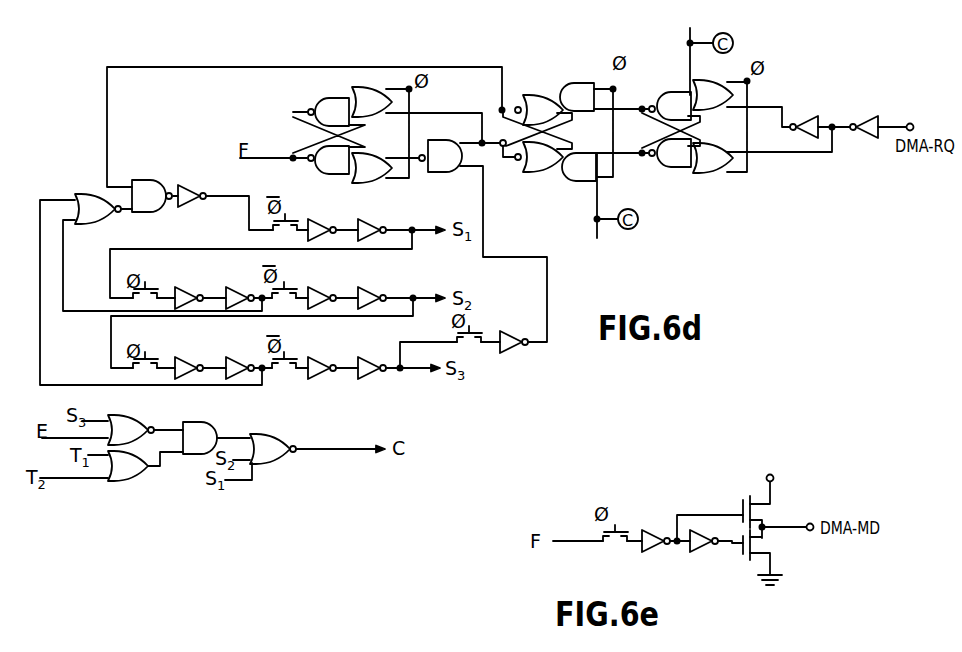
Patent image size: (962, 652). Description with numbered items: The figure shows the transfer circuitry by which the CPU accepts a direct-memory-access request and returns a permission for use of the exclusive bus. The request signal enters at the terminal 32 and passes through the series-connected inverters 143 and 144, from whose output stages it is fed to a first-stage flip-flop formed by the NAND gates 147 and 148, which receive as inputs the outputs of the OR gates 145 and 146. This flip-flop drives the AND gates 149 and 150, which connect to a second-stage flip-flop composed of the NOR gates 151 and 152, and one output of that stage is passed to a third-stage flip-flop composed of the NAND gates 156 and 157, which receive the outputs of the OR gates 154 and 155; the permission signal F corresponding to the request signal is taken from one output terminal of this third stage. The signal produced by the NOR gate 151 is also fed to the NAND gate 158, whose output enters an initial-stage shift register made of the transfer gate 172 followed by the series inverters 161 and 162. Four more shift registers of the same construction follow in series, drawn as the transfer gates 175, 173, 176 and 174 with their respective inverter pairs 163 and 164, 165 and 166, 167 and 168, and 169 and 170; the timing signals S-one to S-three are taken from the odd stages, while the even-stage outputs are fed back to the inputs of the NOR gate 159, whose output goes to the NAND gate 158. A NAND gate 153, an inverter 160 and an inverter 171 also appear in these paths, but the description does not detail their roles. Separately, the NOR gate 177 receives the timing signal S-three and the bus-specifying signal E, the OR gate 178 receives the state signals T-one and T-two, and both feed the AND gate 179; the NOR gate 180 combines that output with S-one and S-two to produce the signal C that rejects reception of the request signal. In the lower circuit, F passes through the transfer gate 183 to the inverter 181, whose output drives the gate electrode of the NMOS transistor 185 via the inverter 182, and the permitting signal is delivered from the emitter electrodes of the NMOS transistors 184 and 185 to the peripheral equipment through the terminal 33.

In FIG. 6d, the terminal 32 is at (908, 124).
In FIG. 6e, the terminal 33 is at (808, 523).
In FIG. 6d, the inverter 143 is at (856, 116).
In FIG. 6d, the inverter 144 is at (800, 114).
In FIG. 6d, the OR gate 145 is at (700, 82).
In FIG. 6d, the OR gate 146 is at (713, 146).
In FIG. 6d, the NAND gate 147 is at (678, 92).
In FIG. 6d, the NAND gate 148 is at (658, 167).
In FIG. 6d, the AND gate 149 is at (590, 83).
In FIG. 6d, the AND gate 150 is at (572, 136).
In FIG. 6d, the NOR gate 151 is at (545, 97).
In FIG. 6d, the NOR gate 152 is at (535, 170).
In FIG. 6d, the NAND gate 153 is at (472, 130).
In FIG. 6d, the OR gate 154 is at (377, 88).
In FIG. 6d, the OR gate 155 is at (376, 153).
In FIG. 6d, the NAND gate 156 is at (338, 100).
In FIG. 6d, the NAND gate 157 is at (350, 166).
In FIG. 6d, the NAND gate 158 is at (166, 176).
In FIG. 6d, the NOR gate 159 is at (92, 196).
In FIG. 6d, the inverter 160 is at (193, 183).
In FIG. 6d, the inverter 161 is at (326, 218).
In FIG. 6d, the inverter 162 is at (373, 224).
In FIG. 6d, the inverter 163 is at (193, 292).
In FIG. 6d, the inverter 164 is at (240, 292).
In FIG. 6d, the inverter 165 is at (314, 296).
In FIG. 6d, the inverter 166 is at (360, 293).
In FIG. 6d, the inverter 167 is at (200, 358).
In FIG. 6d, the inverter 168 is at (241, 364).
In FIG. 6d, the inverter 169 is at (315, 362).
In FIG. 6d, the inverter 170 is at (358, 363).
In FIG. 6d, the inverter with clocked switch 171 is at (526, 324).
In FIG. 6d, the transfer gate 172 is at (298, 226).
In FIG. 6d, the clocked switch 173 is at (296, 290).
In FIG. 6d, the clocked switch 174 is at (302, 352).
In FIG. 6d, the clocked switch 175 is at (152, 290).
In FIG. 6d, the clocked switch 176 is at (162, 352).
In FIG. 6d, the NOR gate 177 is at (136, 417).
In FIG. 6d, the OR gate 178 is at (136, 482).
In FIG. 6d, the AND gate 179 is at (214, 428).
In FIG. 6d, the NOR gate 180 is at (259, 434).
In FIG. 6e, the inverter 181 is at (655, 550).
In FIG. 6e, the inverter 182 is at (700, 550).
In FIG. 6e, the transfer gate 183 is at (623, 542).
In FIG. 6e, the NMOS transistor 184 is at (744, 503).
In FIG. 6e, the NMOS transistor 185 is at (765, 544).